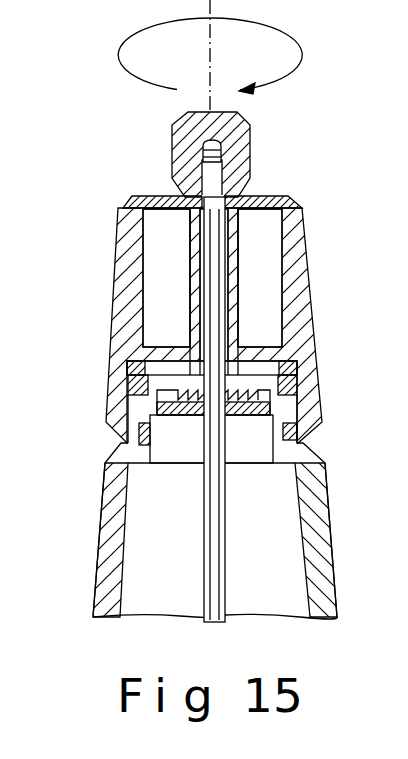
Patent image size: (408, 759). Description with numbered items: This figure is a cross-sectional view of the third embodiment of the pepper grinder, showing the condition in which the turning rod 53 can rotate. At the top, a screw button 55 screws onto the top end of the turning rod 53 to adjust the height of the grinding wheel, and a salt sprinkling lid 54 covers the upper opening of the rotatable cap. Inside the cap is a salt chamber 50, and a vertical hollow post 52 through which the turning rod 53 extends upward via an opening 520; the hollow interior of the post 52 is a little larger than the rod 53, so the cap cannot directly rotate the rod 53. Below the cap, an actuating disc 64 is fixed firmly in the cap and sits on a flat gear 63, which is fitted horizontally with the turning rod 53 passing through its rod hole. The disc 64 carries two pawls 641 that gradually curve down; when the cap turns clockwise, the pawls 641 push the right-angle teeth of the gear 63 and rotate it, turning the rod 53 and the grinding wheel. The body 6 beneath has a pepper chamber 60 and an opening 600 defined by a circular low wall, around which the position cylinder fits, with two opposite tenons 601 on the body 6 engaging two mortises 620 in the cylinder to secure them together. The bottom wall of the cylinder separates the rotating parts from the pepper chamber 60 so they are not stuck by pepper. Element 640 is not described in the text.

The body 6 is at (242, 540).
The salt chamber 50 is at (163, 303).
The vertical hollow post 52 is at (193, 258).
The turning rod 53 is at (208, 287).
The salt sprinkling lid 54 is at (257, 195).
The screw button 55 is at (172, 151).
The pepper chamber 60 is at (155, 515).
The flat gear 63 is at (265, 410).
The actuating disc 64 is at (320, 325).
The opening 520 is at (192, 222).
The opening 600 is at (172, 445).
The tenon 601 is at (278, 435).
The mortise 620 is at (140, 432).
The plate 640 is at (130, 365).
The pawl 641 is at (290, 393).